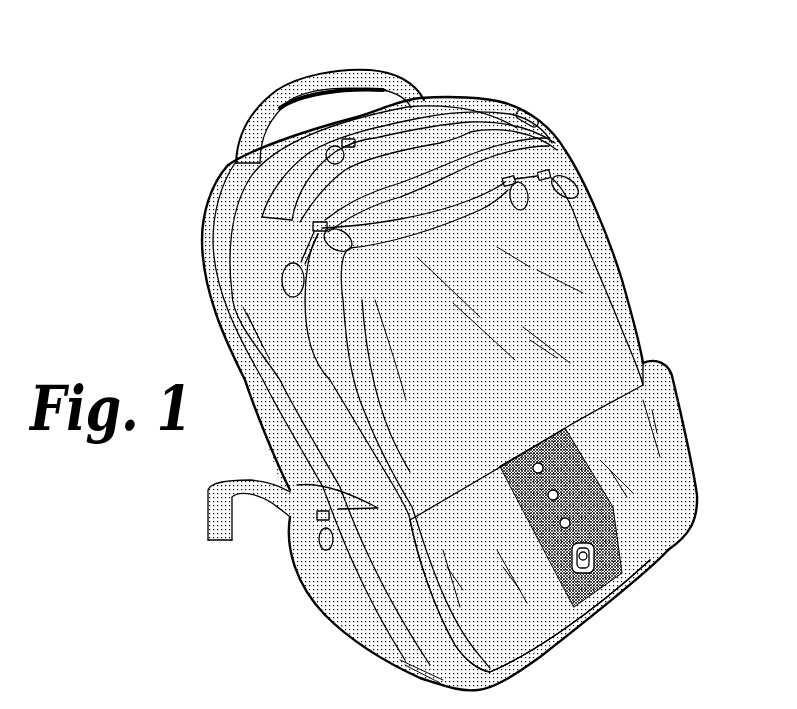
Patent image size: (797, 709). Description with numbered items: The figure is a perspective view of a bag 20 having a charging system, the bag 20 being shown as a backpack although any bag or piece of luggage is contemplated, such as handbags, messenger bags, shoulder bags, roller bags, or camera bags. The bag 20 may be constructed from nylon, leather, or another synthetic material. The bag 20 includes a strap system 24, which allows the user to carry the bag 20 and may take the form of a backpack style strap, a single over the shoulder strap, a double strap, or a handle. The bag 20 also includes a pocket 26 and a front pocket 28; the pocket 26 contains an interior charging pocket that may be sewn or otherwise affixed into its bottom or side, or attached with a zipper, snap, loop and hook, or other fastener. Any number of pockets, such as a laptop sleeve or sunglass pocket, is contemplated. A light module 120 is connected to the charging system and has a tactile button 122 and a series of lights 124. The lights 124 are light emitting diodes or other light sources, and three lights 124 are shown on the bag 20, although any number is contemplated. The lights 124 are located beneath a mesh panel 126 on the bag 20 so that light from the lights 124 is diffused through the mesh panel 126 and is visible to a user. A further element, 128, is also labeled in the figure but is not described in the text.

The bag 20 is at (188, 120).
The strap system 24 is at (307, 78).
The pocket 26 is at (520, 152).
The front pocket 28 is at (549, 177).
The light module 120 is at (590, 516).
The tactile button 122 is at (597, 548).
The lights 124 is at (548, 460).
The mesh panel 126 is at (558, 447).
The USB port 128 is at (590, 556).